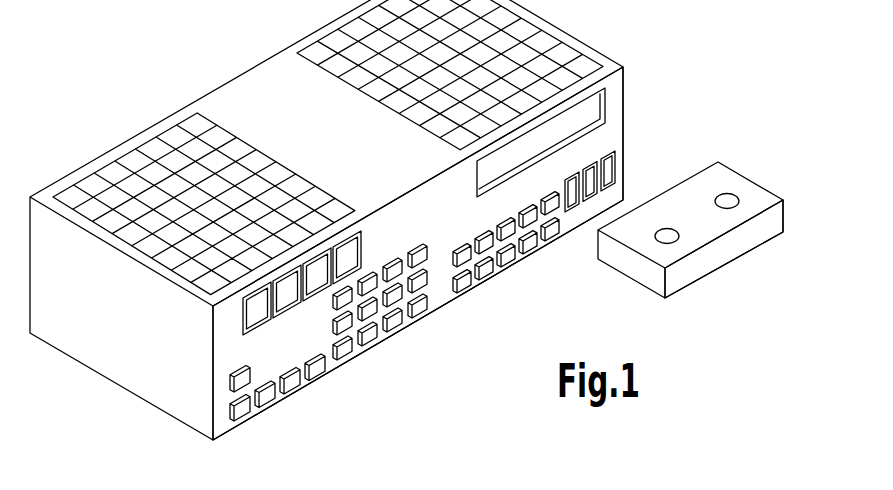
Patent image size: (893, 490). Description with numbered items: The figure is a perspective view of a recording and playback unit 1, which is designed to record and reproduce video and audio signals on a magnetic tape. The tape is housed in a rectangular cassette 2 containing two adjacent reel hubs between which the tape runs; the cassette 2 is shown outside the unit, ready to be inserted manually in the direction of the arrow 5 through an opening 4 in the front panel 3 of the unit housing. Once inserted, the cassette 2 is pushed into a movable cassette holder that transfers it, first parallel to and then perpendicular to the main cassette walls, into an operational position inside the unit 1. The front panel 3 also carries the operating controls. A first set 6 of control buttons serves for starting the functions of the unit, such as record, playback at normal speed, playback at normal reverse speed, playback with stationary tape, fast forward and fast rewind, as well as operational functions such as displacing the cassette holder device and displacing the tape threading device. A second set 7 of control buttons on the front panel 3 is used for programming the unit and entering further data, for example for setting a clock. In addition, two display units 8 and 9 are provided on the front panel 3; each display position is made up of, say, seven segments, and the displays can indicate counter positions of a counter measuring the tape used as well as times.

The recording and playback unit 1 is at (266, 57).
The cassette 2 is at (754, 178).
The front panel 3 is at (443, 298).
The opening 4 is at (594, 105).
The arrow 5 is at (787, 286).
The first set of control buttons 6 is at (526, 265).
The second set of control buttons 7 is at (350, 367).
The display unit 8 is at (623, 166).
The display unit 9 is at (369, 246).